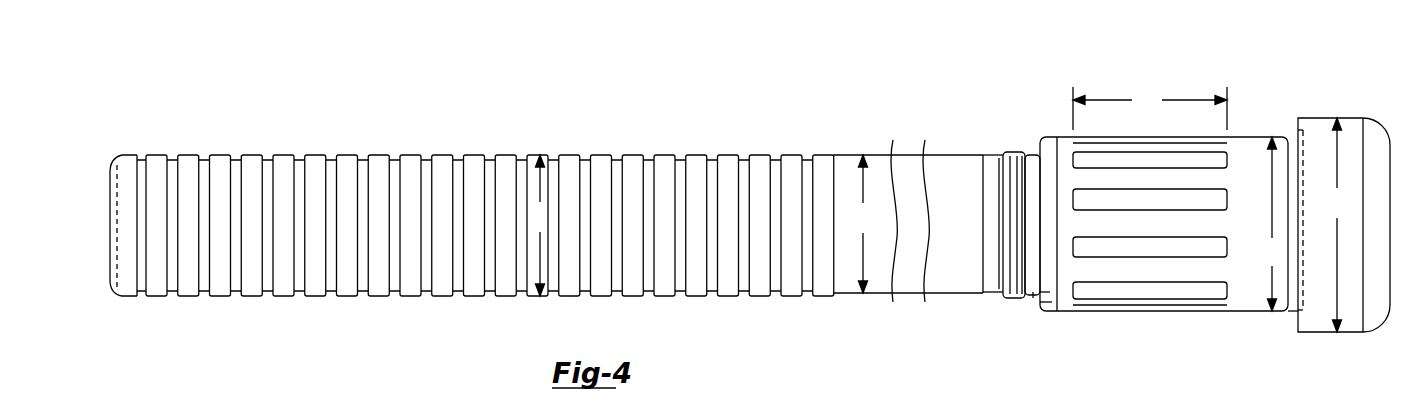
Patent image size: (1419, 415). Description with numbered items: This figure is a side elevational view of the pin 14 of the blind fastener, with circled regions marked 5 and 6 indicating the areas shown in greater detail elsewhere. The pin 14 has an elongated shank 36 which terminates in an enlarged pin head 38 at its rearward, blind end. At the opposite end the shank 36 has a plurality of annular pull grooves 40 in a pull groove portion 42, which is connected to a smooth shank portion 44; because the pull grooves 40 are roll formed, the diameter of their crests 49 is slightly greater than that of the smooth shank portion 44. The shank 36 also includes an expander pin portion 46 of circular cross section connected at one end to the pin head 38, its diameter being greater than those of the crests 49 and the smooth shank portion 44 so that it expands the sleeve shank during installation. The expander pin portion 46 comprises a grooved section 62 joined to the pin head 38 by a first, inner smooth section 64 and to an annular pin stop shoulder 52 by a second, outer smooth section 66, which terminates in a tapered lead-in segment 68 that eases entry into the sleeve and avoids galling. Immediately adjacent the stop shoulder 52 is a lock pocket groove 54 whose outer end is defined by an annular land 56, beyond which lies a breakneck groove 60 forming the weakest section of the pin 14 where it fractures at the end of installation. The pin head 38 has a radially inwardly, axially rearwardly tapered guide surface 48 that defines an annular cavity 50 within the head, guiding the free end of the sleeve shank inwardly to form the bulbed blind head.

The pin 14 is at (688, 114).
The elongated shank 36 is at (698, 220).
The pin head 38 is at (1347, 196).
The annular pull grooves 40 is at (327, 155).
The pull groove portion 42 is at (474, 209).
The smooth shank portion 44 is at (983, 252).
The expander pin portion 46 is at (1147, 245).
The tapered guide surface 48 is at (1296, 128).
The crests 49 is at (380, 153).
The annular cavity 50 is at (1291, 318).
The pin stop shoulder 52 is at (1033, 150).
The lock pocket groove 54 is at (1033, 298).
The annular land 56 is at (1015, 153).
The breakneck groove 60 is at (1000, 153).
The grooved section 62 is at (1150, 269).
The first inner smooth section 64 is at (1298, 192).
The second outer smooth section 66 is at (1048, 292).
The tapered lead-in segment 68 is at (1050, 303).
The detail circle 5 is at (1037, 337).
The detail circle 6 is at (1240, 337).